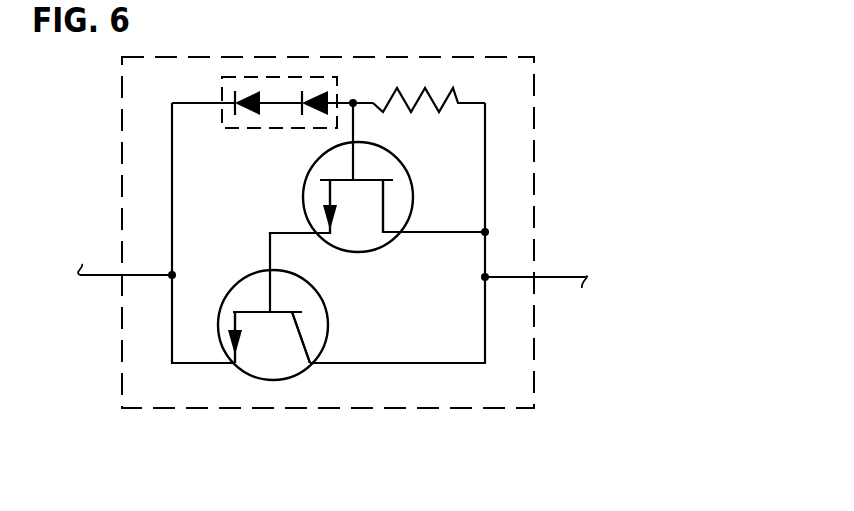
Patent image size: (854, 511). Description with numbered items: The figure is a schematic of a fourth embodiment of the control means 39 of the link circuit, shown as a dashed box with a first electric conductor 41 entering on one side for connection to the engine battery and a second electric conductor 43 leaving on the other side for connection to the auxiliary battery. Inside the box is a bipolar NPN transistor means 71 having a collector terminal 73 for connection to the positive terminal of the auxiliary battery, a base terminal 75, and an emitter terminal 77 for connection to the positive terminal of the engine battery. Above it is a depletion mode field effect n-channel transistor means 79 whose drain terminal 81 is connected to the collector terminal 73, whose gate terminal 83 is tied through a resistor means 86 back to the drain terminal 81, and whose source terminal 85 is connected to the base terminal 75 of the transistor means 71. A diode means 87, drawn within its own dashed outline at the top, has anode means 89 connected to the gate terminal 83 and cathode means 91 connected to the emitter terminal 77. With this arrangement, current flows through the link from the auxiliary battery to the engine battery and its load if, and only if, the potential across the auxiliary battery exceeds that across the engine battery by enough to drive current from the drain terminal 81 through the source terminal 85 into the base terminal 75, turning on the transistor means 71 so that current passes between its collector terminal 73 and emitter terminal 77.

The control means 39 is at (455, 57).
The first electric conductor 41 is at (90, 268).
The second electric conductor 43 is at (568, 273).
The bipolar NPN transistor means 71 is at (270, 392).
The collector terminal 73 is at (302, 338).
The base terminal 75 is at (255, 312).
The emitter terminal 77 is at (243, 322).
The depletion mode field effect n-channel transistor means 79 is at (424, 198).
The drain terminal 81 is at (383, 210).
The gate terminal 83 is at (368, 178).
The source terminal 85 is at (330, 187).
The resistor means 86 is at (458, 82).
The diode means 87 is at (292, 76).
The anode means 89 is at (331, 100).
The cathode means 91 is at (236, 90).